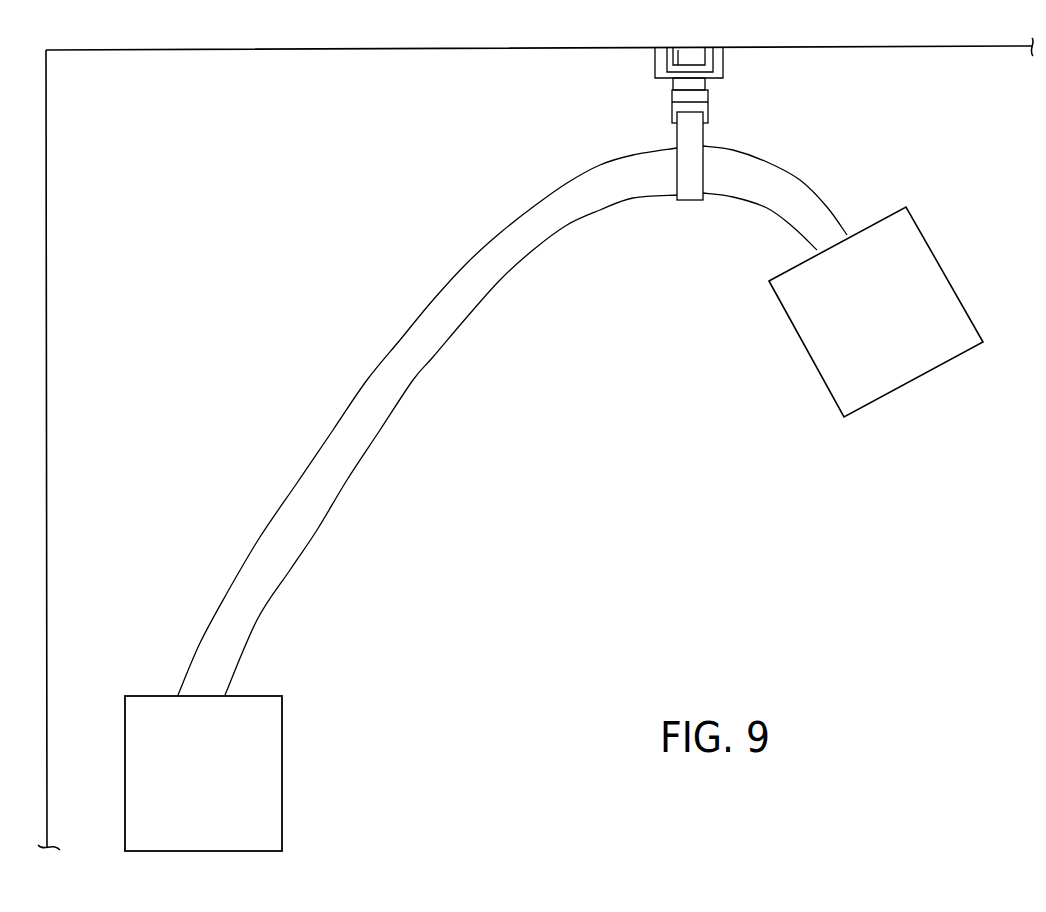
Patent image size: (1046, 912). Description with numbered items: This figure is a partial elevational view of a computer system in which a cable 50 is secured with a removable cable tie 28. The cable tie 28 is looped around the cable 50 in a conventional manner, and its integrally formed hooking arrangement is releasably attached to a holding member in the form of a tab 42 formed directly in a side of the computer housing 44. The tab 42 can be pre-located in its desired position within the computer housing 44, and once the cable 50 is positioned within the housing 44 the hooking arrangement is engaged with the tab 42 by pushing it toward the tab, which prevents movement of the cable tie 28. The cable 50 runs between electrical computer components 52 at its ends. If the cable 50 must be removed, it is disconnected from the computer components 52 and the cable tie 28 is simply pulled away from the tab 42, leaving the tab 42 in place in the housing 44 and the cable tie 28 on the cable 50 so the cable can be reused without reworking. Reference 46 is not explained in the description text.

The computer housing 44 is at (333, 50).
The cable tie 28 is at (708, 132).
The tab 42 is at (725, 70).
The fastener / inner member 46 is at (682, 57).
The cable 50 is at (438, 325).
The computer components 52 is at (260, 769).